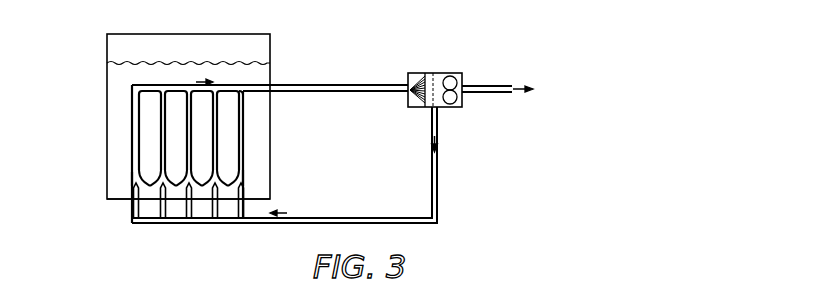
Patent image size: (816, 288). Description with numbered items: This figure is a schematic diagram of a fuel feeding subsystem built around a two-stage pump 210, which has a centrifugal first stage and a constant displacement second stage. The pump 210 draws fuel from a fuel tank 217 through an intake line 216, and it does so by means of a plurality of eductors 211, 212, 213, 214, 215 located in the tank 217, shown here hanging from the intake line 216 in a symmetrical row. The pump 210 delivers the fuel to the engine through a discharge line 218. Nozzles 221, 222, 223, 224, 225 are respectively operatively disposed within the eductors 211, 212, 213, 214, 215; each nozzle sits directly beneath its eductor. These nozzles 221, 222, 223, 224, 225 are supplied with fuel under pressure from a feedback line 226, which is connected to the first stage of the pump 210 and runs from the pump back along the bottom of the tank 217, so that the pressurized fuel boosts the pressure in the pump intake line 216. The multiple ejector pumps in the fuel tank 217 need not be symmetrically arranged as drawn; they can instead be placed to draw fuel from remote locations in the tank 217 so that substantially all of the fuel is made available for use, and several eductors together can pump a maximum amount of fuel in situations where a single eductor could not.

The two-stage pump 210 is at (434, 73).
The eductor 211 is at (136, 181).
The eductor 212 is at (162, 181).
The eductor 213 is at (188, 181).
The eductor 214 is at (215, 181).
The eductor 215 is at (240, 178).
The intake line 216 is at (330, 85).
The fuel tank 217 is at (255, 131).
The discharge line 218 is at (495, 87).
The nozzle 221 is at (134, 188).
The nozzle 222 is at (162, 189).
The nozzle 223 is at (188, 189).
The nozzle 224 is at (214, 189).
The nozzle 225 is at (245, 188).
The feedback line 226 is at (440, 166).